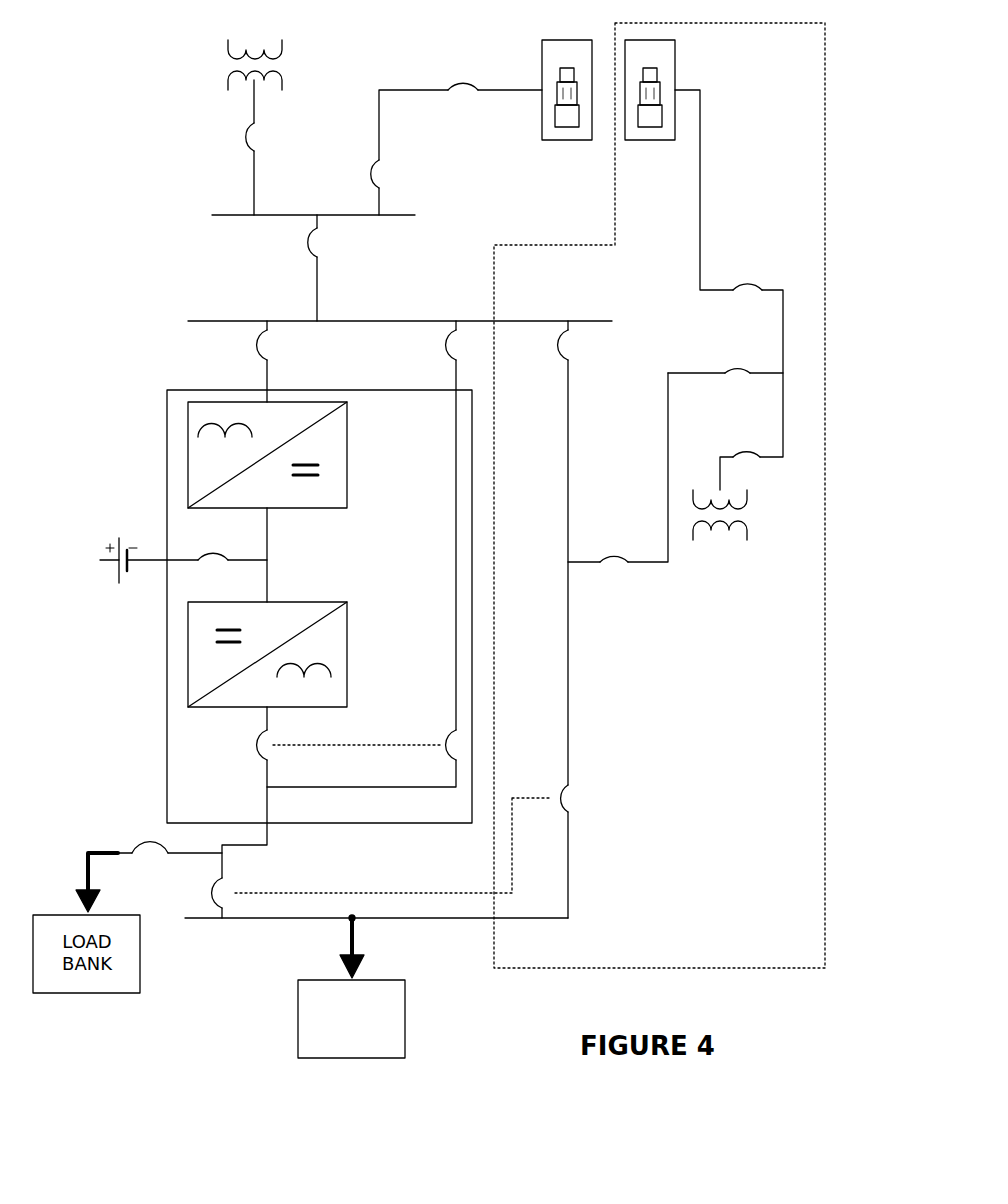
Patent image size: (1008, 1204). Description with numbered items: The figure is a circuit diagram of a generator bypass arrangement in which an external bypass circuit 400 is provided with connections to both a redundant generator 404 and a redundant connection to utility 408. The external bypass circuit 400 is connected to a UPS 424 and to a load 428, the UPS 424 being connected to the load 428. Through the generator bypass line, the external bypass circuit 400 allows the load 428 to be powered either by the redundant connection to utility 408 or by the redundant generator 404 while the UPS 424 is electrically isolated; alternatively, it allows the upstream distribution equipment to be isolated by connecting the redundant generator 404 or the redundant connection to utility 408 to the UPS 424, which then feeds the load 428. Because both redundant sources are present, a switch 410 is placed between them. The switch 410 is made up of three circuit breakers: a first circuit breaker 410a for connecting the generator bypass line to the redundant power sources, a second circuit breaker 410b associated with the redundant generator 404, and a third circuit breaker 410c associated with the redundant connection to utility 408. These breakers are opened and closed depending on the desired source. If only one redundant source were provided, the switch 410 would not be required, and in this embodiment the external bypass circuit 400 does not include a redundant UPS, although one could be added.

The external bypass circuit 400 is at (693, 872).
The redundant generator 404 is at (677, 70).
The redundant connection to utility 408 is at (720, 537).
The switch 410 is at (651, 314).
The first circuit breaker 410a is at (738, 352).
The second circuit breaker 410b is at (745, 268).
The third circuit breaker 410c is at (750, 440).
The UPS 424 is at (177, 390).
The load 428 is at (405, 1020).